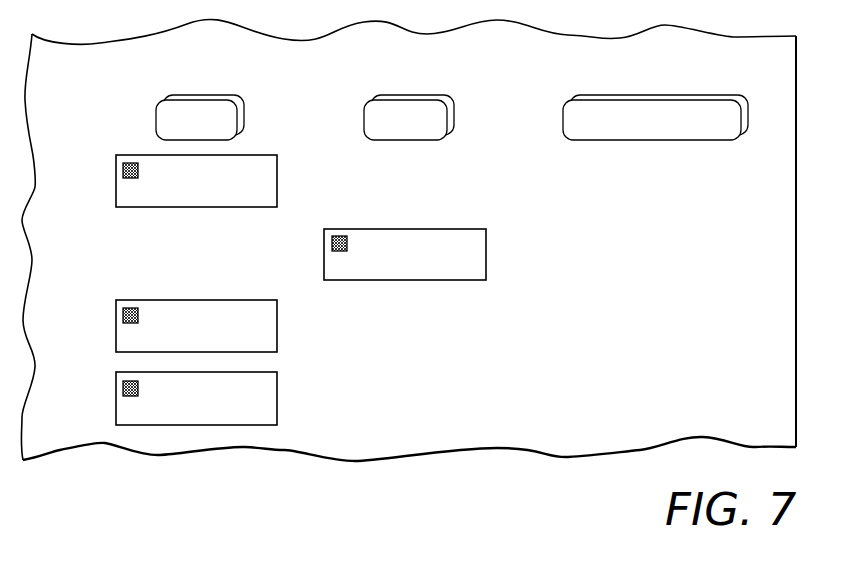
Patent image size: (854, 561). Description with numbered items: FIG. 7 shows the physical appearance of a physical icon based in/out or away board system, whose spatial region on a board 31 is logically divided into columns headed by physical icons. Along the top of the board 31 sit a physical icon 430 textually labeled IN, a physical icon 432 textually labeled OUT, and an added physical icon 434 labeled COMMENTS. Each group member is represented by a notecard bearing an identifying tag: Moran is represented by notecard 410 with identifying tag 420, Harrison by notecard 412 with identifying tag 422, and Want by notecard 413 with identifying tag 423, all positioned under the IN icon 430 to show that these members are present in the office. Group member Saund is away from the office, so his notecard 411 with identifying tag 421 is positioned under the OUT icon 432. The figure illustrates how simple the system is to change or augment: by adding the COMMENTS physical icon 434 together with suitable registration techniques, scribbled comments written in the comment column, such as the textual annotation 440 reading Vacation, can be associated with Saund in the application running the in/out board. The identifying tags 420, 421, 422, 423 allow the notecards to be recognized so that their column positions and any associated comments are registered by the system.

The board 31 is at (798, 200).
The notecard 410 is at (177, 184).
The notecard 411 is at (405, 239).
The notecard 412 is at (177, 311).
The notecard 413 is at (199, 388).
The identifying tag 420 is at (121, 171).
The identifying tag 421 is at (330, 242).
The identifying tag 422 is at (121, 317).
The identifying tag 423 is at (121, 387).
The physical icon 430 is at (195, 100).
The physical icon 432 is at (410, 99).
The physical icon 434 is at (635, 99).
The comment text (Vacation) 440 is at (684, 280).